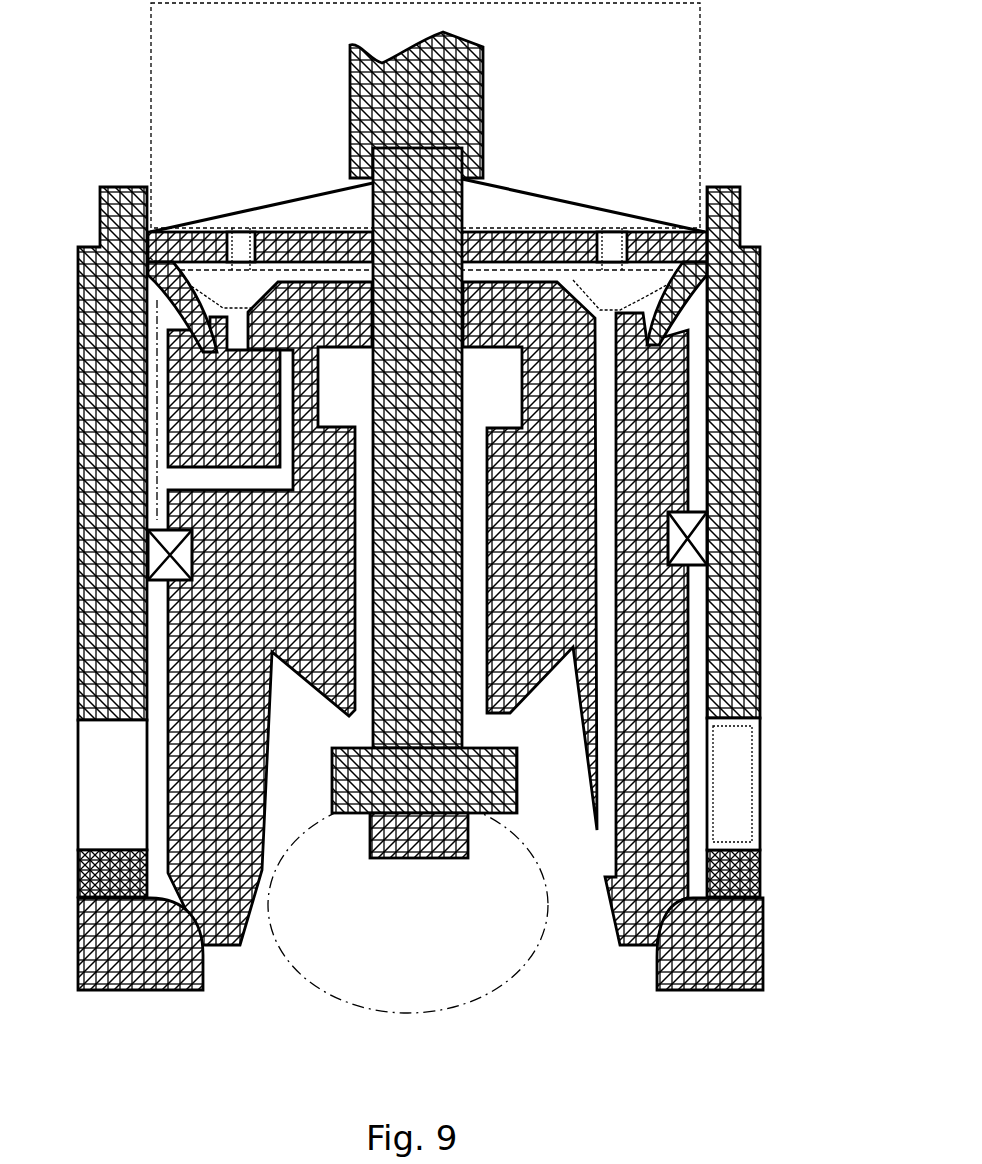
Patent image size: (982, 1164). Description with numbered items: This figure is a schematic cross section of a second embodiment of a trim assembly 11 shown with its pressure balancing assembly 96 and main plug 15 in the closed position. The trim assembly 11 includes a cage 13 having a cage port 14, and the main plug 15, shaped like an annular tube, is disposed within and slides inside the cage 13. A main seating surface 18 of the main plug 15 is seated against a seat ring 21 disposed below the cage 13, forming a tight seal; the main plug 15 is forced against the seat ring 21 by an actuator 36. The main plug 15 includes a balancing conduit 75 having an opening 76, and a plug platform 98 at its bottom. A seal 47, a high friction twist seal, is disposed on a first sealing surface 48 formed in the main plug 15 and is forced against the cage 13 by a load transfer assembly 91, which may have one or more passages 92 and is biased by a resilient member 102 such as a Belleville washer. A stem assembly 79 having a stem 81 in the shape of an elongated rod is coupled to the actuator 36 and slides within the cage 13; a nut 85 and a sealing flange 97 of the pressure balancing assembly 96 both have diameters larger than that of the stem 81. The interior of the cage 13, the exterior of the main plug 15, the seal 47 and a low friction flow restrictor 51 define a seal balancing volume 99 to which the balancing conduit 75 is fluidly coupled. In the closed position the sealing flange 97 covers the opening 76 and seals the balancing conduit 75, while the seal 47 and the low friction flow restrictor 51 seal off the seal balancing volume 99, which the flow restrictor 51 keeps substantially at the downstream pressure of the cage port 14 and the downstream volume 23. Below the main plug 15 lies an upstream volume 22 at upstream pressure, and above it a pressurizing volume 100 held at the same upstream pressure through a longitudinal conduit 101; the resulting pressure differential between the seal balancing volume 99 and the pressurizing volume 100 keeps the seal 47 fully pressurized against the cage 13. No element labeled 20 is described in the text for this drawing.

The pressurizing volume 100 is at (150, 62).
The trim assembly 11 is at (441, 183).
The actuator 36 is at (470, 128).
The stem 81 is at (370, 210).
The stem assembly 79 is at (492, 198).
The seal 47 is at (233, 230).
The resilient member 102 is at (560, 230).
The passages 92 is at (608, 228).
The load transfer assembly 91 is at (441, 207).
The sealing flange 97 is at (602, 308).
The first sealing surface 48 is at (232, 305).
The cage 13 is at (456, 605).
The opening 76 is at (280, 372).
The seal balancing volume 99 is at (156, 440).
The balancing conduit 75 is at (172, 482).
The pressure balancing assembly 96 is at (471, 388).
The low friction flow restrictor 51 is at (695, 543).
The piston 20 is at (501, 613).
The cage port 14 is at (771, 784).
The downstream volume 23 is at (763, 812).
The plug platform 98 is at (348, 720).
The longitudinal conduit 101 is at (600, 780).
The nut 85 is at (362, 820).
The main plug 15 is at (615, 910).
The upstream volume 22 is at (340, 998).
The main seating surface 18 is at (708, 990).
The seat ring 21 is at (720, 990).